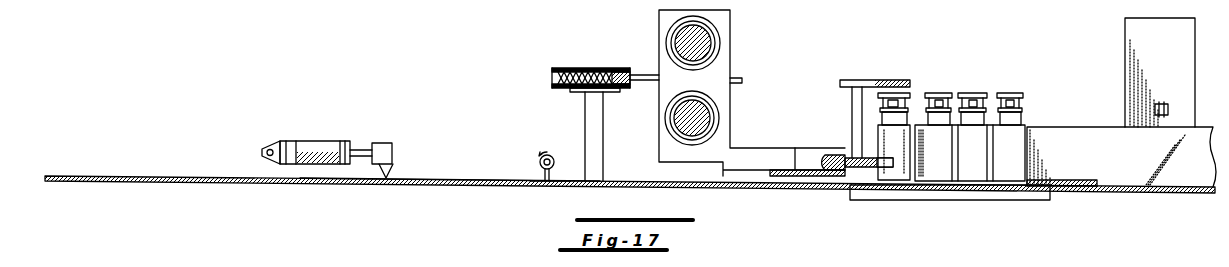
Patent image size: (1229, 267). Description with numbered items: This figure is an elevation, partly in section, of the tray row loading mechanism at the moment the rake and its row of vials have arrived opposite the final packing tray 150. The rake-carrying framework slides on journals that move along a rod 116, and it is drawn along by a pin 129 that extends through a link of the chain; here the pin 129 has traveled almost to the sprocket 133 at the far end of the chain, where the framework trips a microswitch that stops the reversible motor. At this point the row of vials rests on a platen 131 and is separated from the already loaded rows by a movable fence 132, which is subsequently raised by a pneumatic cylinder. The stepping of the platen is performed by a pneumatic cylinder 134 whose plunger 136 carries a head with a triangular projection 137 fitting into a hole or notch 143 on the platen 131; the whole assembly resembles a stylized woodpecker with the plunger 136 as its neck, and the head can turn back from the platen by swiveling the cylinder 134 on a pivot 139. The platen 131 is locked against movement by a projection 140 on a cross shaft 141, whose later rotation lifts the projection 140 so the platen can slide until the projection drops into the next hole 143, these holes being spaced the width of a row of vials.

The rod 116 is at (712, 42).
The pin 129 is at (643, 84).
The platen 131 is at (112, 176).
The movable fence 132 is at (916, 182).
The sprocket 133 is at (590, 67).
The pneumatic cylinder 134 is at (301, 140).
The plunger 136 is at (363, 148).
The triangular projection 137 is at (392, 170).
The pivot 139 is at (262, 150).
The projection 140 is at (549, 181).
The cross shaft 141 is at (548, 153).
The hole 143 is at (466, 177).
The final packing tray 150 is at (1140, 165).